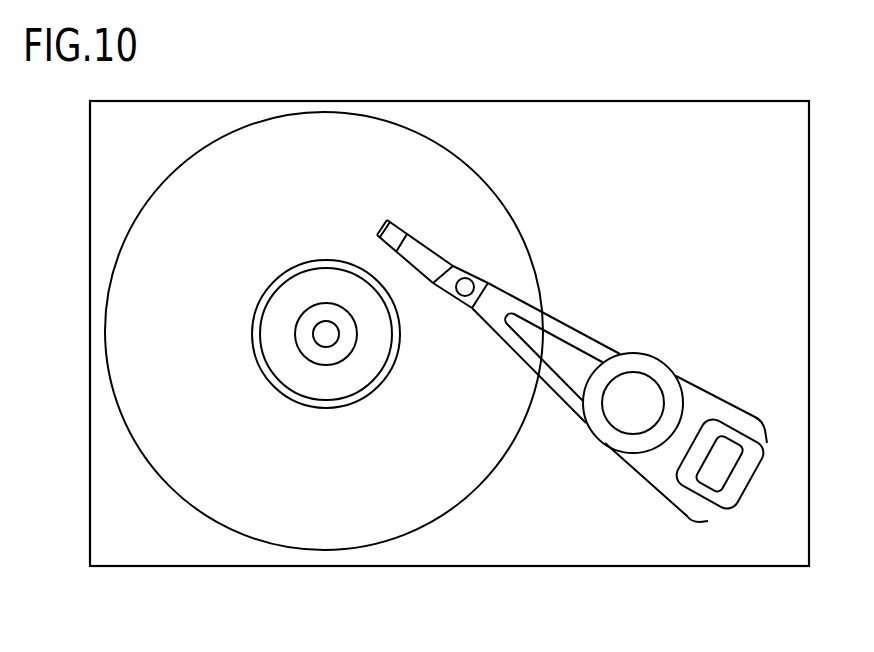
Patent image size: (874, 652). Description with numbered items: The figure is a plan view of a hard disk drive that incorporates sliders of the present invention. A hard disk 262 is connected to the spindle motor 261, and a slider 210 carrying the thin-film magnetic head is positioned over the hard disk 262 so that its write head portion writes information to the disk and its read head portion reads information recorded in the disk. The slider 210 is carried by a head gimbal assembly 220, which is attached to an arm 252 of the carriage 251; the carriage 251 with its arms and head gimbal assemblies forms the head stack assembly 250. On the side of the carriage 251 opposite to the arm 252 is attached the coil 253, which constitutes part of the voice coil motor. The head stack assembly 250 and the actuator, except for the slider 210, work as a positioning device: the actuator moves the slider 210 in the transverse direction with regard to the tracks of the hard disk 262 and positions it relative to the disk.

The slider 210 is at (397, 225).
The head gimbal assembly 220 is at (433, 283).
The head stack assembly 250 is at (637, 473).
The carriage 251 is at (641, 352).
The arm 252 is at (562, 402).
The coil 253 is at (750, 487).
The spindle motor 261 is at (325, 347).
The hard disk 262 is at (324, 375).